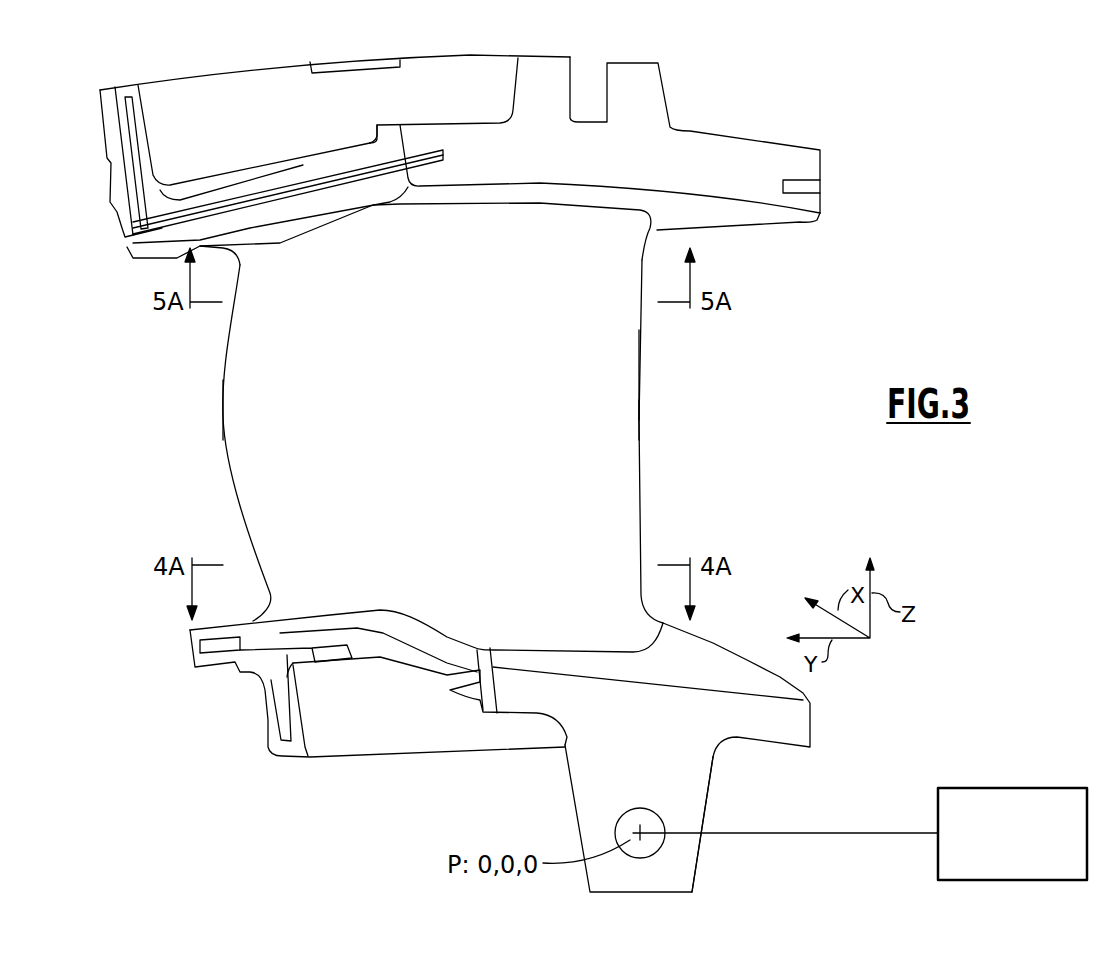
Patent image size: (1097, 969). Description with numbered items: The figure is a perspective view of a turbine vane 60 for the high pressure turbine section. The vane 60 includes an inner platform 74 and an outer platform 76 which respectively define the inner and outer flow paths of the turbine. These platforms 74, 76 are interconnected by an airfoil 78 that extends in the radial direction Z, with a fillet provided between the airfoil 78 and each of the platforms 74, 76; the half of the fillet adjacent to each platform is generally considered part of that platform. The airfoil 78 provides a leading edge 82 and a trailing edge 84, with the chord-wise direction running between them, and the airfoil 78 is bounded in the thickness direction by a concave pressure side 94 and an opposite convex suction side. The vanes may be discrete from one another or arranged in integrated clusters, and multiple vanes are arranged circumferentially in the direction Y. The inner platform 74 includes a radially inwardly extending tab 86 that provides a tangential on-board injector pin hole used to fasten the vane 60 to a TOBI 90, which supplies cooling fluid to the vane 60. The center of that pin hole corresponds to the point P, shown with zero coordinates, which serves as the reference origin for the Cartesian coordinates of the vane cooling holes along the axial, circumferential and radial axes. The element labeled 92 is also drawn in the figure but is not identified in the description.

The vane 60 is at (837, 243).
The inner platform 74 is at (257, 627).
The outer platform 76 is at (738, 158).
The airfoil 78 is at (640, 333).
The leading edge 82 is at (615, 413).
The trailing edge 84 is at (222, 421).
The tab 86 is at (573, 795).
The TOBI 90 is at (1023, 788).
The root neck 92 is at (670, 770).
The pressure side 94 is at (402, 447).